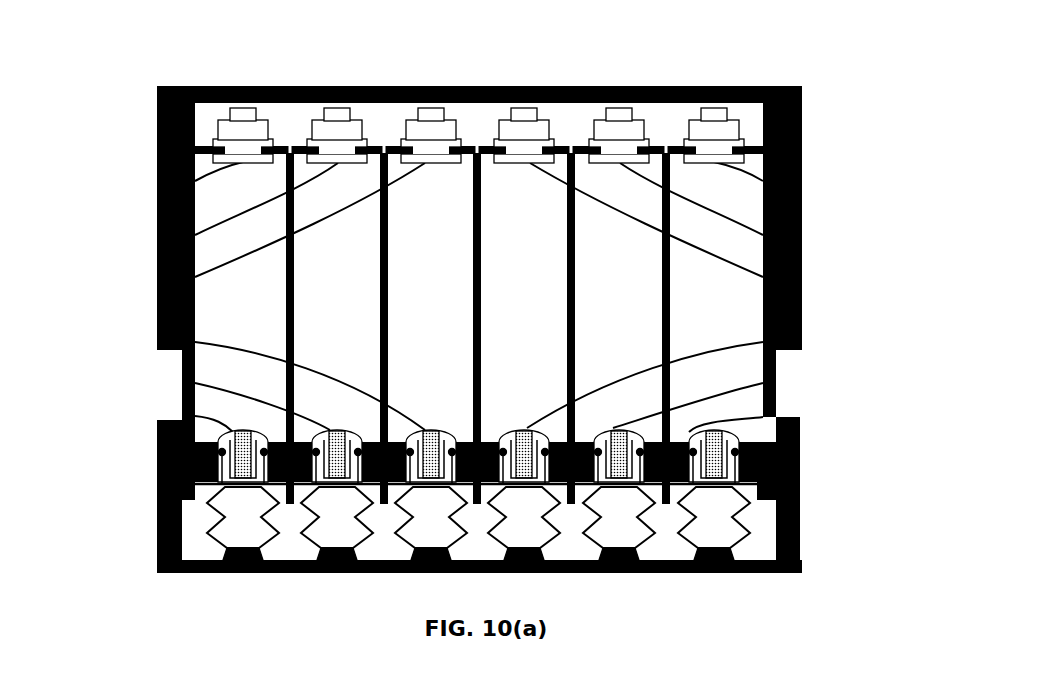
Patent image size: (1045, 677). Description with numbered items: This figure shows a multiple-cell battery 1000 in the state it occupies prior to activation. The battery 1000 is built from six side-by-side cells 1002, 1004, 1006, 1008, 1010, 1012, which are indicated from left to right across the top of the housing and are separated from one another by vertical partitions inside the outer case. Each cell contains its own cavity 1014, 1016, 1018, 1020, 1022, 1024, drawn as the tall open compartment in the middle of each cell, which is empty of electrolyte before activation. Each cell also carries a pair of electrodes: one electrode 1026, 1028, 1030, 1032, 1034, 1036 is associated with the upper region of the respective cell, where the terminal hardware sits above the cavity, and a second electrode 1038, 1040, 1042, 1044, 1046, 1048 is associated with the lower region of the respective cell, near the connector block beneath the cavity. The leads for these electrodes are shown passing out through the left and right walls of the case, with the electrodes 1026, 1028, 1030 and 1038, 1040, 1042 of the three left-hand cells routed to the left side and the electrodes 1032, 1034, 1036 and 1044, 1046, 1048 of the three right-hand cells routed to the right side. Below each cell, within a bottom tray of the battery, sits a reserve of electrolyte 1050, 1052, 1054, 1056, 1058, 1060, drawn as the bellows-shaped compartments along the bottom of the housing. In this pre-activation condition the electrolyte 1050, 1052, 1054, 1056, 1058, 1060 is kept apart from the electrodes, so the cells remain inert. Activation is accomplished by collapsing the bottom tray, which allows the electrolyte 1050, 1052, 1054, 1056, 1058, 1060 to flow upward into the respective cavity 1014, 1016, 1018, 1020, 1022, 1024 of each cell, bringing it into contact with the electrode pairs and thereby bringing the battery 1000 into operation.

The multiple-cell battery 1000 is at (845, 95).
The cell 1002 is at (235, 72).
The cell 1004 is at (335, 72).
The cell 1006 is at (427, 72).
The cell 1008 is at (523, 72).
The cell 1010 is at (617, 72).
The cell 1012 is at (722, 72).
The cavity 1014 is at (226, 298).
The cavity 1016 is at (320, 298).
The cavity 1018 is at (414, 298).
The cavity 1020 is at (507, 298).
The cavity 1022 is at (602, 298).
The cavity 1024 is at (697, 298).
The electrode 1026 is at (195, 181).
The electrode 1028 is at (195, 235).
The electrode 1030 is at (195, 277).
The electrode 1032 is at (763, 181).
The electrode 1034 is at (763, 235).
The electrode 1036 is at (763, 277).
The electrode 1038 is at (195, 416).
The electrode 1040 is at (195, 383).
The electrode 1042 is at (195, 342).
The electrode 1044 is at (763, 417).
The electrode 1046 is at (763, 383).
The electrode 1048 is at (763, 342).
The electrolyte 1050 is at (243, 523).
The electrolyte 1052 is at (337, 523).
The electrolyte 1054 is at (431, 523).
The electrolyte 1056 is at (524, 523).
The electrolyte 1058 is at (619, 523).
The electrolyte 1060 is at (714, 523).